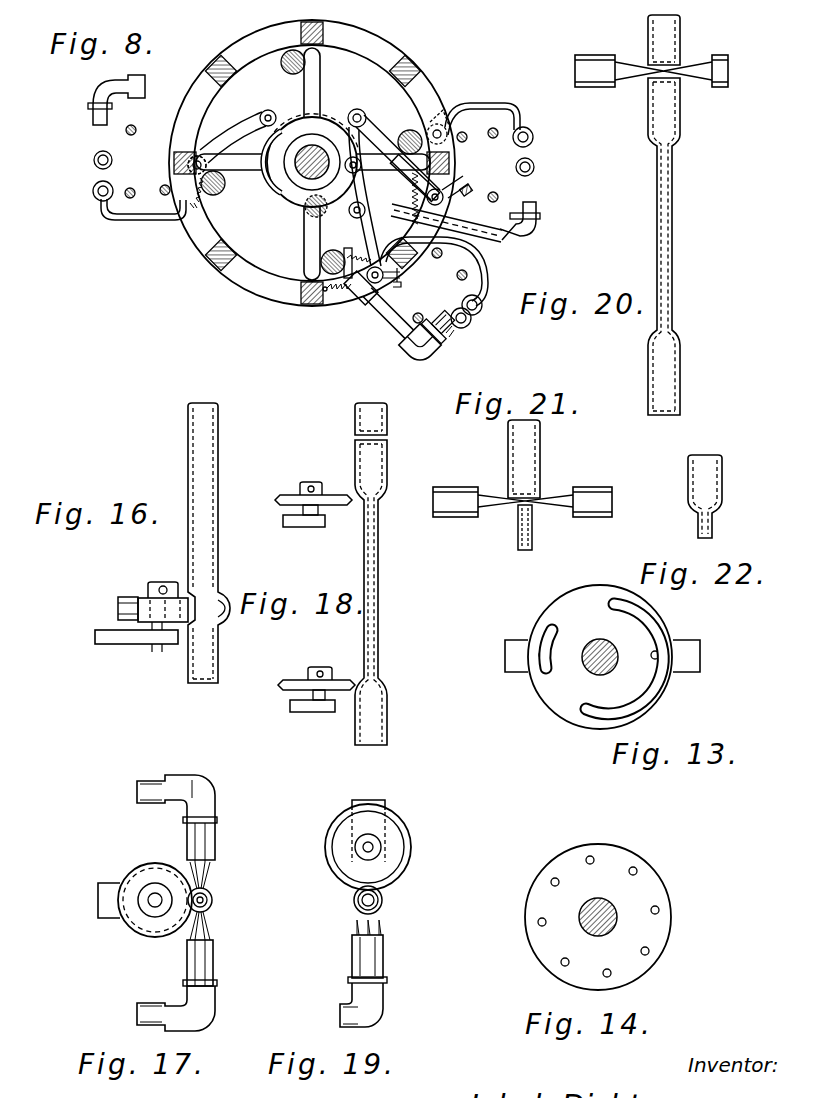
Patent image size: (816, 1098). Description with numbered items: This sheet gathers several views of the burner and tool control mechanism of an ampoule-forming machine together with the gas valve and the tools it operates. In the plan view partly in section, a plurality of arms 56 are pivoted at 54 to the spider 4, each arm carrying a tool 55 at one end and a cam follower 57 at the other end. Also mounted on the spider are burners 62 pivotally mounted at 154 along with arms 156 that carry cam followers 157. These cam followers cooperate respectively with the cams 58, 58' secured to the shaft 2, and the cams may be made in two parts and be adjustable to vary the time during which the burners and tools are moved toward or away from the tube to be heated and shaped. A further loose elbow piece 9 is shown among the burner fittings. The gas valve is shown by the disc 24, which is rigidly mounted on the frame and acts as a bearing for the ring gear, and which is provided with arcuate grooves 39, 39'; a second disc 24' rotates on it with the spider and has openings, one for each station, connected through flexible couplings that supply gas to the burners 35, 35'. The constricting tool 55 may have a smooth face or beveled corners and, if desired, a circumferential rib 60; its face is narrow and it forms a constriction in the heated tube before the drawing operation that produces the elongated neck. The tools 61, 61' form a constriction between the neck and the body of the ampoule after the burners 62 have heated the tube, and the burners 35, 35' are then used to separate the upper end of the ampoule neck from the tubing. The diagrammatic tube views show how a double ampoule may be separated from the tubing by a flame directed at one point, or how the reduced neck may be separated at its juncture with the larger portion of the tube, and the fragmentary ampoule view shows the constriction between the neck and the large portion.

In FIG. 8, the shaft 2 is at (318, 145).
In FIG. 8, the spider 4 is at (263, 292).
In FIG. 8, the pipe connection ring 9 is at (472, 318).
In FIG. 13, the disc 24 is at (667, 622).
In FIG. 14, the second disc 24′ is at (668, 890).
In FIG. 17, the burner 35 is at (214, 960).
In FIG. 17, the burner 35′ is at (214, 843).
In FIG. 13, the arcuate groove 39 is at (628, 598).
In FIG. 13, the arcuate groove 39′ is at (560, 618).
In FIG. 8, the pivot 54 is at (445, 122).
In FIG. 8, the tool 55 is at (530, 142).
In FIG. 16, the tool 55 is at (140, 602).
In FIG. 17, the tool 55 is at (150, 876).
In FIG. 8, the arm 56 is at (508, 100).
In FIG. 8, the cam follower 57 is at (260, 117).
In FIG. 8, the cam 58 is at (275, 192).
In FIG. 8, the cam 58′ is at (308, 216).
In FIG. 16, the circumferential rib 60 is at (118, 608).
In FIG. 18, the tool 61 is at (290, 690).
In FIG. 19, the tool 61 is at (406, 844).
In FIG. 18, the tool 61′ is at (307, 501).
In FIG. 8, the burner 62 is at (530, 240).
In FIG. 19, the burner 62 is at (385, 950).
In FIG. 8, the pivot 154 is at (448, 190).
In FIG. 8, the arm 156 is at (405, 150).
In FIG. 8, the cam follower 157 is at (356, 110).